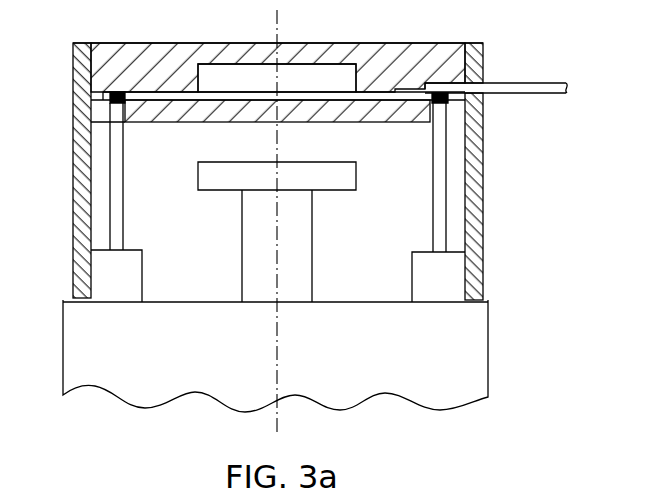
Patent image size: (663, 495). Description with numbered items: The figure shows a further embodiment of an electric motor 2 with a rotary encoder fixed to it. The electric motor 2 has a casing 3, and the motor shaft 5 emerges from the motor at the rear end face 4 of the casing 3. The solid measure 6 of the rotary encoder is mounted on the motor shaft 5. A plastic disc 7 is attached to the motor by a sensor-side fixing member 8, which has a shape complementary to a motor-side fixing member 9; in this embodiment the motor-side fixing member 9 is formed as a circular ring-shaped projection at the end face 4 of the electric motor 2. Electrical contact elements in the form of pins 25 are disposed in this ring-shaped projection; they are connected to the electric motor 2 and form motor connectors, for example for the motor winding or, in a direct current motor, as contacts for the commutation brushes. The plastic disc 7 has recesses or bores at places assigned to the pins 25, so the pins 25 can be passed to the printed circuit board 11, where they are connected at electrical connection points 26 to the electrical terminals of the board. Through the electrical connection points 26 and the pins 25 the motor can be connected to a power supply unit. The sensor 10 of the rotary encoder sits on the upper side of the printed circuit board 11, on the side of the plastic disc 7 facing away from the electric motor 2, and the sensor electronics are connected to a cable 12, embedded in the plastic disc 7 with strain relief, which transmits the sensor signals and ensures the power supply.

The electric motor 2 is at (63, 346).
The casing 3 is at (467, 374).
The rear end face 4 is at (162, 298).
The motor shaft 5 is at (242, 240).
The solid measure 6 is at (357, 175).
The plastic disc 7 is at (401, 70).
The sensor-side fixing member 8 is at (477, 238).
The motor-side fixing member 9 is at (443, 272).
The sensor 10 is at (231, 76).
The printed circuit board 11 is at (148, 95).
The cable 12 is at (535, 87).
The pins 25 is at (112, 140).
The electrical connection points 26 is at (105, 96).